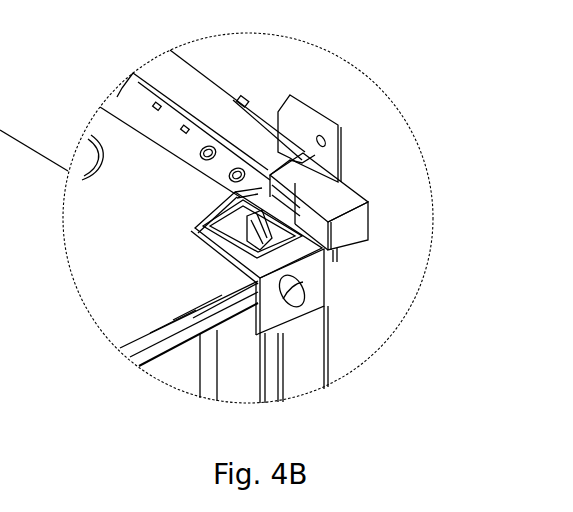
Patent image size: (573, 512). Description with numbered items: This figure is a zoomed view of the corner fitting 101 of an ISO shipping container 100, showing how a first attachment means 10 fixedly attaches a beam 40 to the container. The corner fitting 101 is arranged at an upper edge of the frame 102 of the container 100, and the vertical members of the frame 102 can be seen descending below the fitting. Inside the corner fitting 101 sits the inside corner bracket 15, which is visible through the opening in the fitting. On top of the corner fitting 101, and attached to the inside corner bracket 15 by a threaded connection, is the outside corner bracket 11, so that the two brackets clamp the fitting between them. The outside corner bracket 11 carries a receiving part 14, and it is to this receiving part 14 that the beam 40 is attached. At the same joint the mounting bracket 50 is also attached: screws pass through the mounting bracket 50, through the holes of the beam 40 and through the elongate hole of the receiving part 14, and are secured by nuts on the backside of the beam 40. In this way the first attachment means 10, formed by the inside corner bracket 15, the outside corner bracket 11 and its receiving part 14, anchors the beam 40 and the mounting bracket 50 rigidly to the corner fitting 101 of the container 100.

The ISO shipping container 100 is at (146, 213).
The beam 40 is at (168, 83).
The mounting bracket 50 is at (323, 124).
The receiving part 14 is at (307, 172).
The outside corner bracket 11 is at (358, 234).
The first attachment means 10 is at (360, 265).
The inside corner bracket 15 is at (250, 238).
The corner fitting 101 is at (317, 290).
The frame 102 is at (318, 378).